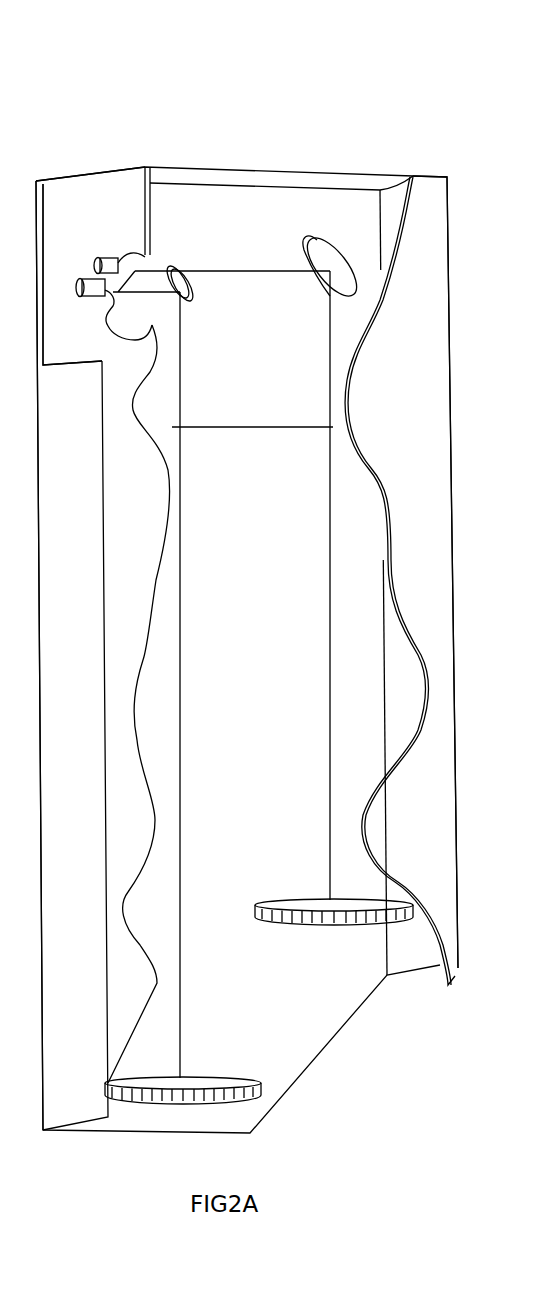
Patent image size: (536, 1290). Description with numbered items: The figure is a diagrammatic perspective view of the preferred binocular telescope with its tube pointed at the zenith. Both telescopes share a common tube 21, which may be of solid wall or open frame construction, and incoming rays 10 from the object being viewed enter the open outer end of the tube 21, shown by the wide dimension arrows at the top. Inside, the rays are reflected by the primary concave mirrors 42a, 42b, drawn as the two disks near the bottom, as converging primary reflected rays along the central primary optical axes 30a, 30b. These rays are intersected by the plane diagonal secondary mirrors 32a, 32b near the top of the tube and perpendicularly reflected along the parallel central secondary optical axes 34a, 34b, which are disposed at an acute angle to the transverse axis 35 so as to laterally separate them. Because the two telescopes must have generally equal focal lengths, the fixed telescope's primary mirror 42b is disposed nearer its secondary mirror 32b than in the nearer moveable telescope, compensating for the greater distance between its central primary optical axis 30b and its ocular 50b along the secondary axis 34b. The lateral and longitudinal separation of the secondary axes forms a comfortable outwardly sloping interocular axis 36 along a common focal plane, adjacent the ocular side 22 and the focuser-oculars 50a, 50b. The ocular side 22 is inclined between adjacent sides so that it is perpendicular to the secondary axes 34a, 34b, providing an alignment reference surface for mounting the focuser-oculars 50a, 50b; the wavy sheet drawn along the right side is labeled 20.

The incoming rays 10 is at (427, 165).
The flexible light-diffusing curtain 20 is at (456, 179).
The common tube 21 is at (447, 243).
The ocular side 22 is at (58, 190).
The central primary optical axis 30a is at (183, 575).
The central primary optical axis 30b is at (323, 775).
The plane diagonal secondary mirror 32a is at (192, 282).
The plane diagonal secondary mirror 32b is at (337, 252).
The central secondary optical axis 34a is at (150, 294).
The central secondary optical axis 34b is at (248, 276).
The transverse axis 35 is at (228, 429).
The interocular axis 36 is at (128, 296).
The primary concave mirror 42a is at (197, 1075).
The primary concave mirror 42b is at (293, 898).
The focuser-ocular 50a is at (95, 300).
The focuser-ocular 50b is at (95, 260).